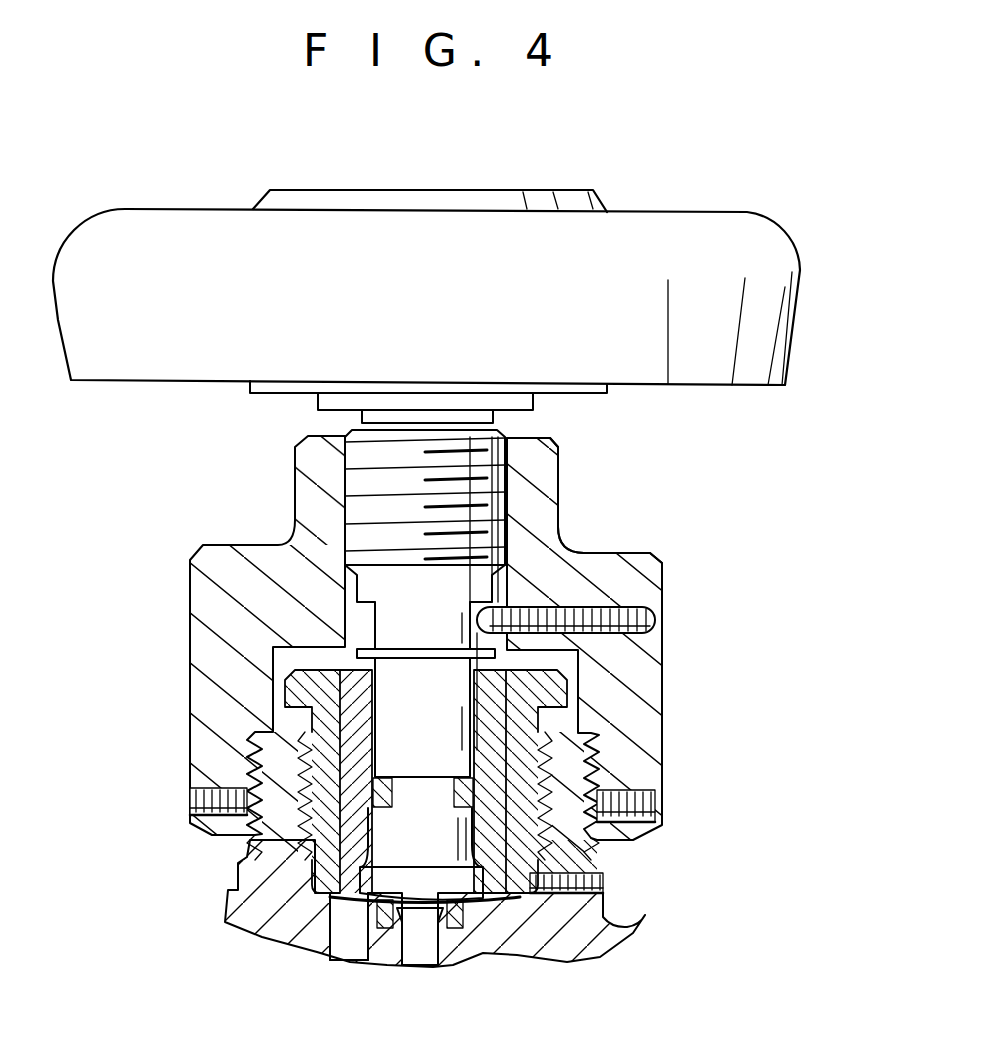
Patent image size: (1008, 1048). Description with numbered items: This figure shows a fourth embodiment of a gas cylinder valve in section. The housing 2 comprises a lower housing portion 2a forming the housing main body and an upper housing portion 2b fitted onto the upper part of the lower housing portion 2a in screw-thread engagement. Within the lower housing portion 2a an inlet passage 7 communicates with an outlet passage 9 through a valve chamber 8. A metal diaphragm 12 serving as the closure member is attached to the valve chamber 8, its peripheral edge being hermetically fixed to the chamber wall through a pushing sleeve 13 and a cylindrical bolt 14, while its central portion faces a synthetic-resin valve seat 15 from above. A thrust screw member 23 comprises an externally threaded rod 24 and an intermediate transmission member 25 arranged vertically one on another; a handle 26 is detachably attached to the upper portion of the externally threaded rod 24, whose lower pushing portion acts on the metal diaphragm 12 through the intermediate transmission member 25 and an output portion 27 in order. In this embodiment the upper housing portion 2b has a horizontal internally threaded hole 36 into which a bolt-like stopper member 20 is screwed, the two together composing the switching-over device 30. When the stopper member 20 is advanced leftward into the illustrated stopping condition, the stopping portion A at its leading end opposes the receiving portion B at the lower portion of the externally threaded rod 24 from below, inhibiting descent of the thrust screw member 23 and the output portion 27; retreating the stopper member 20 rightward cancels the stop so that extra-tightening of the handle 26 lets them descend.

The housing 2 is at (76, 740).
The lower housing portion 2a is at (221, 905).
The upper housing portion 2b is at (187, 760).
The inlet passage 7 is at (418, 950).
The valve chamber 8 is at (340, 897).
The outlet passage 9 is at (345, 943).
The metal diaphragm 12 is at (480, 897).
The pushing sleeve 13 is at (565, 690).
The cylindrical bolt 14 is at (570, 705).
The valve seat 15 is at (452, 925).
The stopper member 20 is at (658, 623).
The thrust screw member 23 is at (512, 466).
The externally threaded rod 24 is at (390, 445).
The intermediate transmission member 25 is at (540, 753).
The handle 26 is at (787, 270).
The output portion 27 is at (427, 887).
The switching-over device 30 is at (755, 502).
The internally threaded hole 36 is at (655, 560).
The stopping portion A is at (490, 602).
The receiving portion B is at (490, 593).